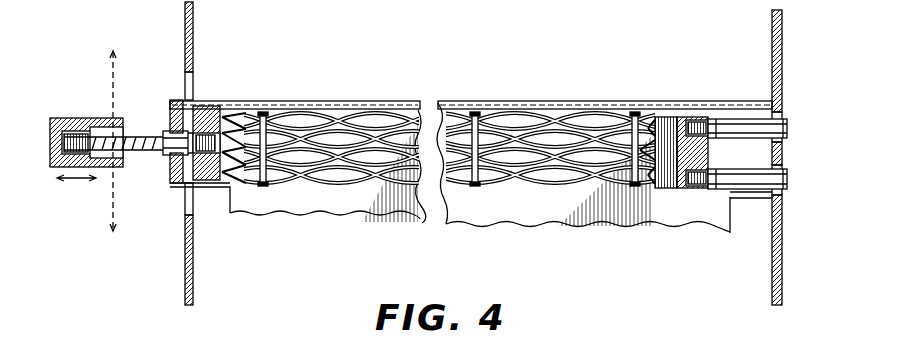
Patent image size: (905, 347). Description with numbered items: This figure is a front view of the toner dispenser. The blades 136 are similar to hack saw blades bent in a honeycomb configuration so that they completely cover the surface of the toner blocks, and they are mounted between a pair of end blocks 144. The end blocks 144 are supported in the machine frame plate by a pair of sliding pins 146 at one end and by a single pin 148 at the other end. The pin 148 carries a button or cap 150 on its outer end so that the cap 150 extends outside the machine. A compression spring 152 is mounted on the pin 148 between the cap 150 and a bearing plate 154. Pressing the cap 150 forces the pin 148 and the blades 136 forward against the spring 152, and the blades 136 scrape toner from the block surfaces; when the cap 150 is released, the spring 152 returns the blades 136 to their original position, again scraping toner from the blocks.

The blades 136 is at (366, 103).
The end blocks 144 is at (213, 108).
The sliding pins 146 is at (788, 125).
The pin 148 is at (137, 136).
The cap 150 is at (91, 118).
The compression spring 152 is at (137, 155).
The bearing plate 154 is at (170, 183).